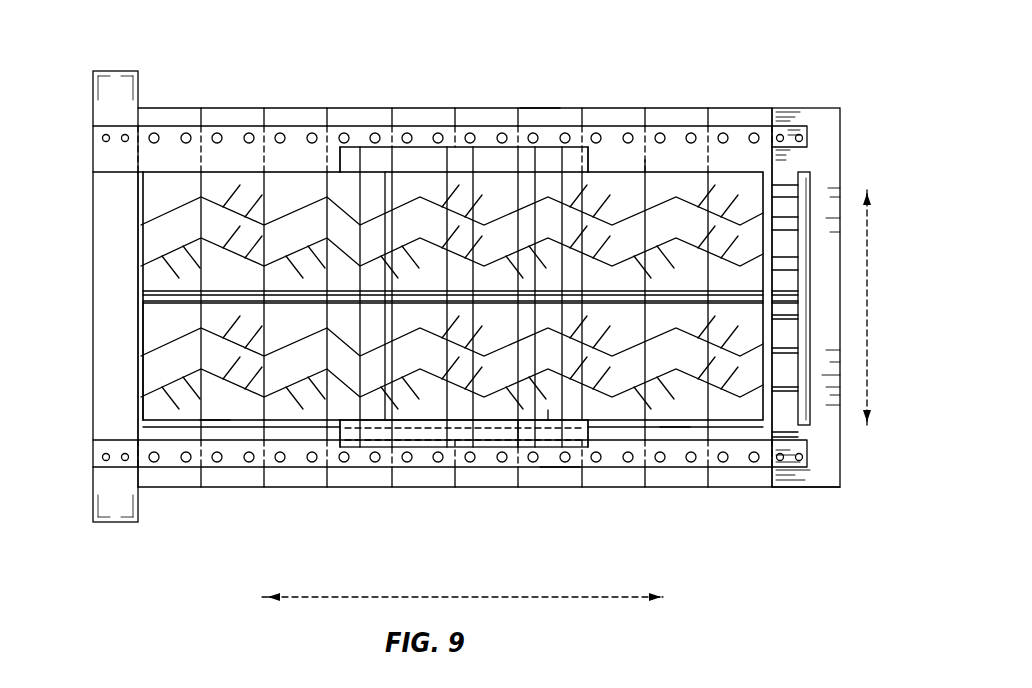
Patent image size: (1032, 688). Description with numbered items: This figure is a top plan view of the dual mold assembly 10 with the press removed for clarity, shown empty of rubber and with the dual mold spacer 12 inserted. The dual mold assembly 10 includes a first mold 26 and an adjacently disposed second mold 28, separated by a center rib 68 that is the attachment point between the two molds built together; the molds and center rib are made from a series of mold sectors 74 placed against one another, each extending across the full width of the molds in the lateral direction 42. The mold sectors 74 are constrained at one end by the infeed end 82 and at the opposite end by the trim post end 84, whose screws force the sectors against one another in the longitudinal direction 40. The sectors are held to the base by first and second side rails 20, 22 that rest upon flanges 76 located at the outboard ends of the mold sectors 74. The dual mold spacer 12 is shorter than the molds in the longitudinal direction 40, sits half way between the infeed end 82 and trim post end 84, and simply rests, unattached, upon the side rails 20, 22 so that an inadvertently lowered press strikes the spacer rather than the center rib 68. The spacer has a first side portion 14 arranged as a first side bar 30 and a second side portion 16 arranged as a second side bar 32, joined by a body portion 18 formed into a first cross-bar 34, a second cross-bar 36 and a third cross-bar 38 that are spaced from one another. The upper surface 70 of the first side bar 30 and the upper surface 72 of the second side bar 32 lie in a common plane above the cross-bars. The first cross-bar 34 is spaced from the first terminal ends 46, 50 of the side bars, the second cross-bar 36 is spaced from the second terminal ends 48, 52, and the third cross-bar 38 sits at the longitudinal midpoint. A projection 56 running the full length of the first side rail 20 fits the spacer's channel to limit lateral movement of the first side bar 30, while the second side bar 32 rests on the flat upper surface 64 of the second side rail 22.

The dual mold assembly 10 is at (745, 50).
The dual mold spacer 12 is at (467, 117).
The first side portion 14 is at (473, 503).
The first side bar 30 is at (473, 503).
The second side portion 16 is at (562, 293).
The second side bar 32 is at (562, 293).
The body portion 18 is at (580, 257).
The first side rail 20 is at (268, 460).
The second side rail 22 is at (267, 132).
The first mold 26 is at (147, 338).
The second mold 28 is at (147, 222).
The first cross-bar 34 is at (553, 413).
The second cross-bar 36 is at (349, 408).
The third cross-bar 38 is at (470, 405).
The longitudinal direction 40 is at (457, 597).
The lateral direction 42 is at (867, 303).
The first terminal end of first side bar 46 is at (598, 434).
The second terminal end of first side bar 48 is at (330, 434).
The first terminal end of second side bar 50 is at (598, 156).
The second terminal end of second side bar 52 is at (334, 158).
The projection 56 is at (672, 432).
The flat upper surface 64 is at (661, 155).
The center rib 68 is at (152, 294).
The upper surface of first side bar 70 is at (510, 438).
The upper surface of second side bar 72 is at (483, 156).
The mold sectors 74 is at (215, 413).
The flanges 76 is at (540, 117).
The infeed end 82 is at (103, 383).
The trim post end 84 is at (830, 155).